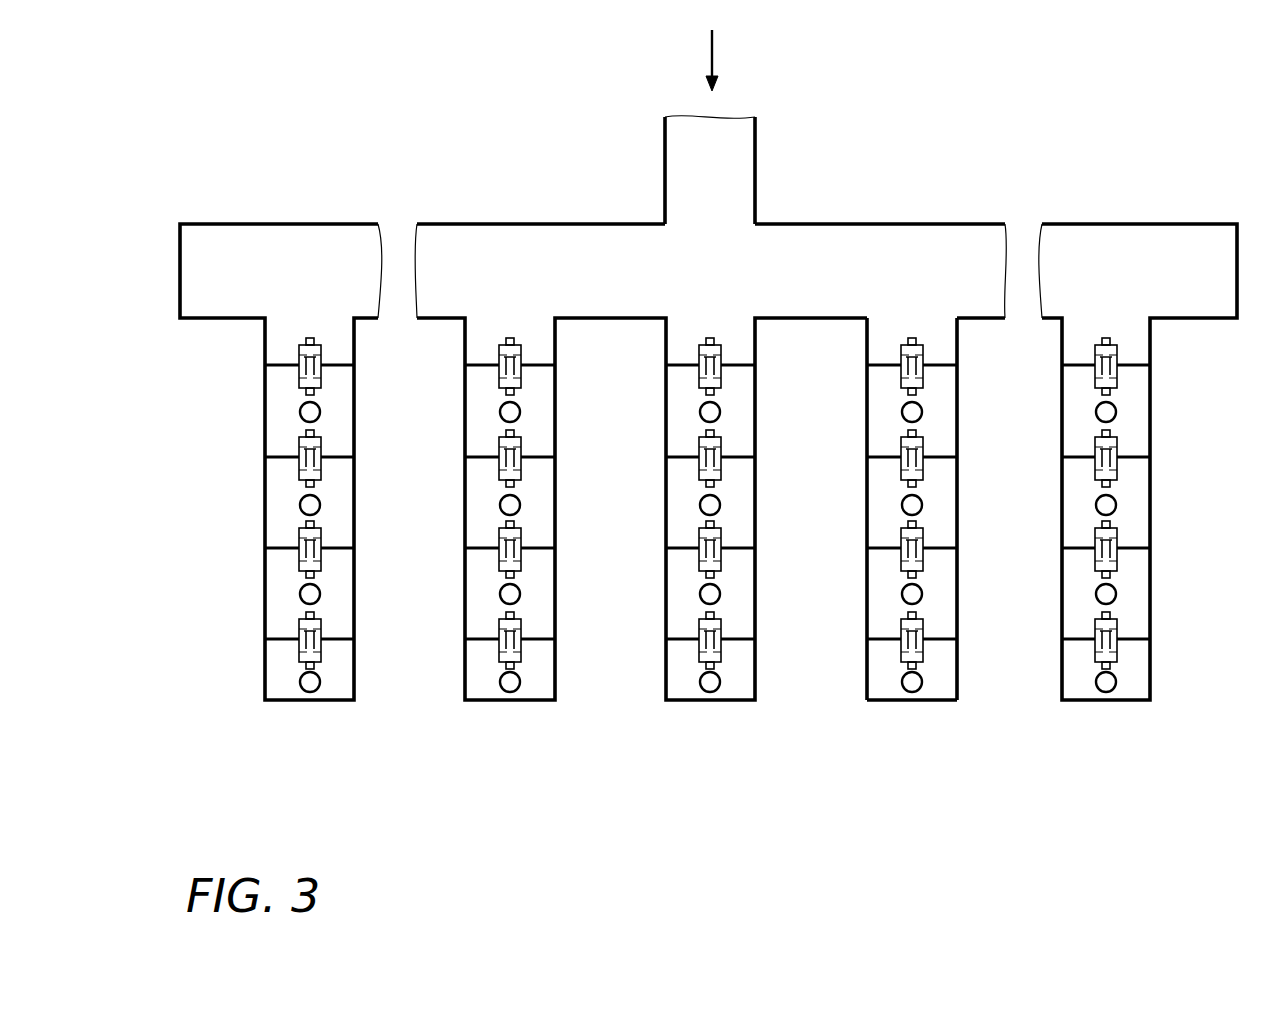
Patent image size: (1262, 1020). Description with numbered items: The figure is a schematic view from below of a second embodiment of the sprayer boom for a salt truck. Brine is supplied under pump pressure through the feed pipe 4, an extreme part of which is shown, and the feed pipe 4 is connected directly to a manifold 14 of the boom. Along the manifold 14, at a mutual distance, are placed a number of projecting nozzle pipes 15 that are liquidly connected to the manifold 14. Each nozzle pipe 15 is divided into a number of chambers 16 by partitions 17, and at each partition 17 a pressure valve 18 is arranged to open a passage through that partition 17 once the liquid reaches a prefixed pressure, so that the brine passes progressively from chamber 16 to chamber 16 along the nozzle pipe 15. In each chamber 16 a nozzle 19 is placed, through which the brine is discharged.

The feed pipe 4 is at (730, 170).
The manifold 14 is at (845, 277).
The nozzle pipe 15 is at (913, 700).
The chamber 16 is at (943, 529).
The partition 17 is at (945, 458).
The pressure valve 18 is at (924, 466).
The nozzle 19 is at (921, 510).